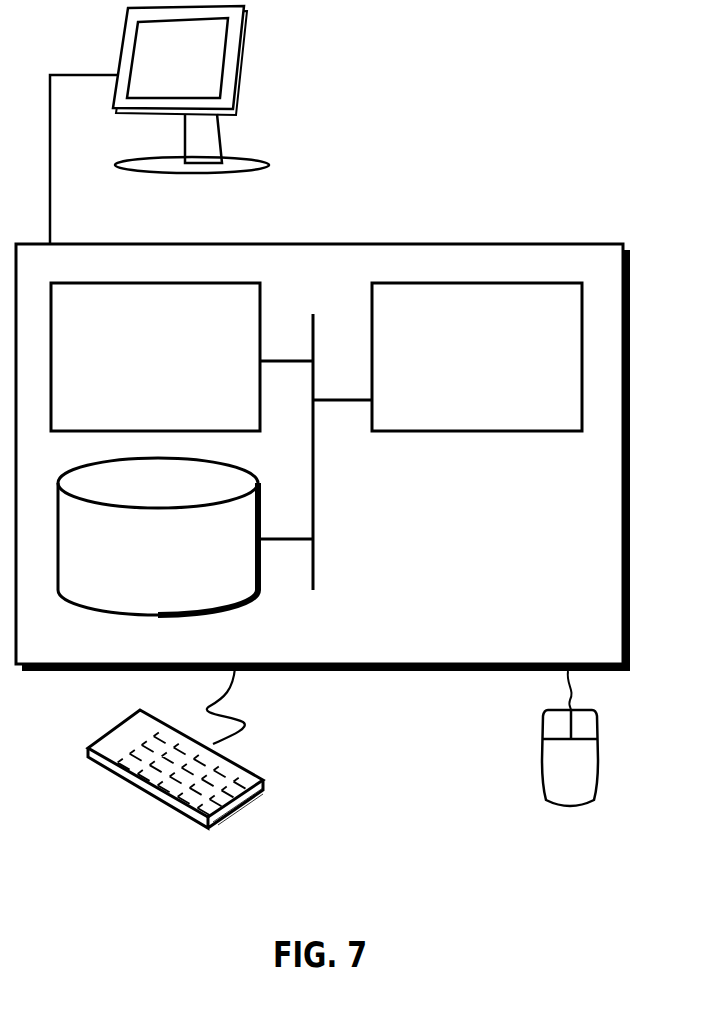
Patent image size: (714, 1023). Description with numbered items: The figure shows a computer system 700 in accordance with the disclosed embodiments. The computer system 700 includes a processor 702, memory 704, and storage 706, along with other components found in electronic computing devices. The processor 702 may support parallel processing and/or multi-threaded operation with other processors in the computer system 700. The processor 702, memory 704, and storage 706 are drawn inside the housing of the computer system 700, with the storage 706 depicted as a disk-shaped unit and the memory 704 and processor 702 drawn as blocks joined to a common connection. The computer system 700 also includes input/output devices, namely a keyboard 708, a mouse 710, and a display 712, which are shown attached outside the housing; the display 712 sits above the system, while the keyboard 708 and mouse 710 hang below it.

The computer system 700 is at (362, 214).
The processor 702 is at (461, 369).
The memory 704 is at (137, 368).
The storage 706 is at (143, 565).
The keyboard 708 is at (105, 767).
The mouse 710 is at (590, 777).
The display 712 is at (159, 125).